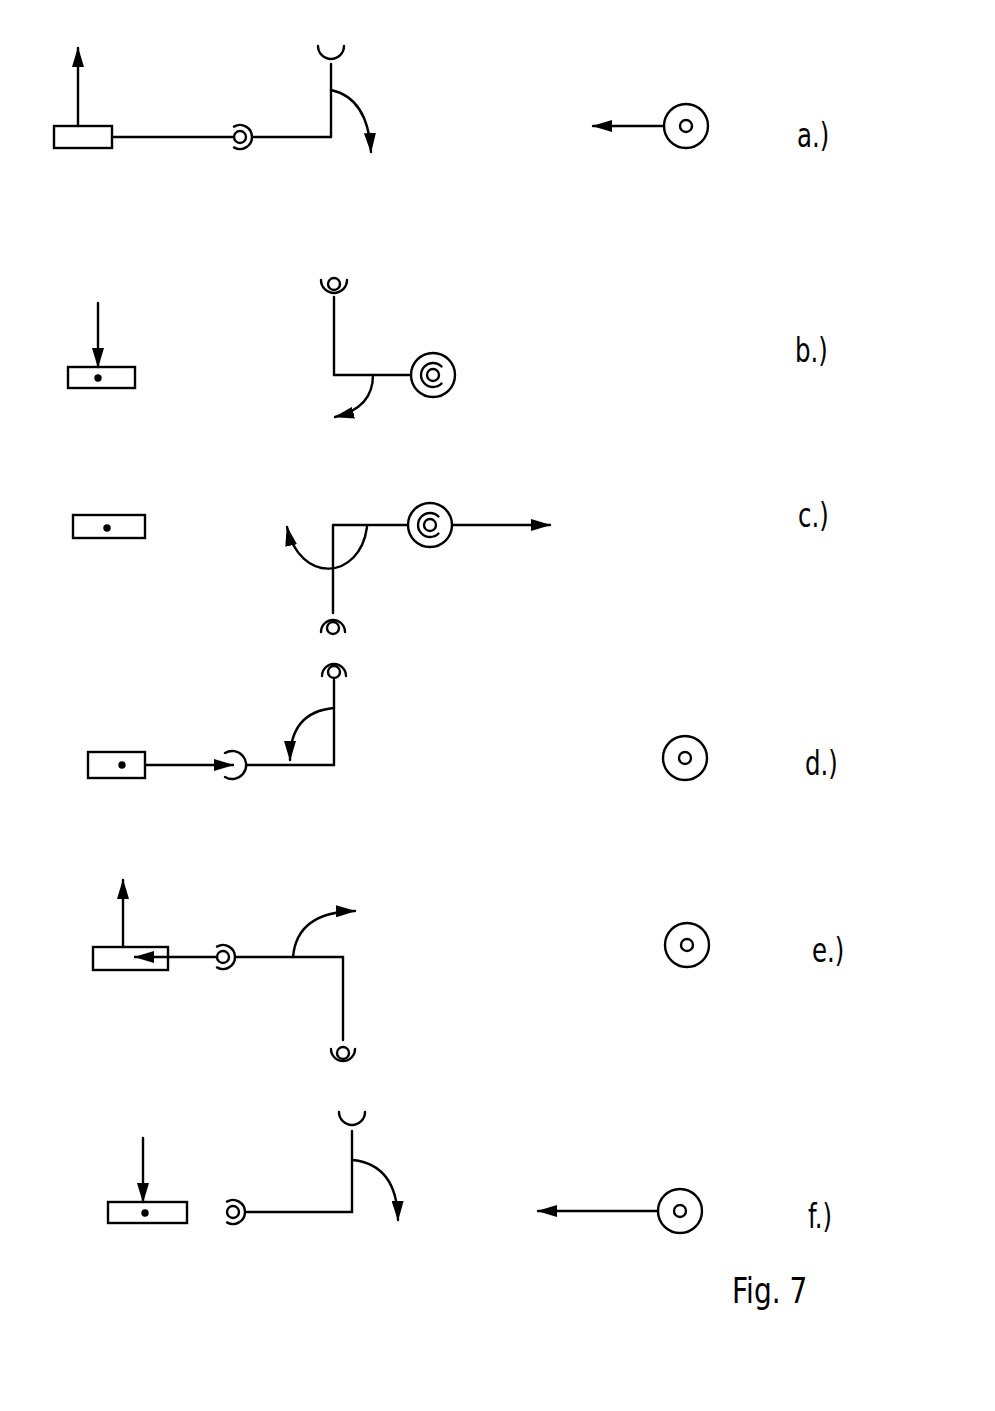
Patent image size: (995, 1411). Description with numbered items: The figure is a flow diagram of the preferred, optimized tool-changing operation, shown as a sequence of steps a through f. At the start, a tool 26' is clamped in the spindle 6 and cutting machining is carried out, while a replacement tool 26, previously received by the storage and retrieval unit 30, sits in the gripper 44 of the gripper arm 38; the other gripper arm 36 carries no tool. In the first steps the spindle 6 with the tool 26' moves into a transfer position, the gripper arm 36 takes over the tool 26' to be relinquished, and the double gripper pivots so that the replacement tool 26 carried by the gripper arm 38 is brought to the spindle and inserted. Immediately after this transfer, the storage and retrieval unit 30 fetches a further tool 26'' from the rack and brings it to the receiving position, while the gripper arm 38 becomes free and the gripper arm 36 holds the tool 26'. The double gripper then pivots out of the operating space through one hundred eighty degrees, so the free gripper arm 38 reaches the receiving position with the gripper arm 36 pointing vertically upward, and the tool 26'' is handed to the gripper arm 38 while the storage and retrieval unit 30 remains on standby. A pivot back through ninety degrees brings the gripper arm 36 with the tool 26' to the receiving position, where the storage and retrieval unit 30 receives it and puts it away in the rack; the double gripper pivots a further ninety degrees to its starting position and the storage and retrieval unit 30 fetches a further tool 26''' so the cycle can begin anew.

The spindle 6 is at (698, 107).
The replacement tool 26 is at (498, 679).
The tool to be relinquished 26' is at (450, 597).
The further tool 26'' is at (263, 833).
The further tool 26''' is at (147, 1251).
The storage and retrieval unit 30 is at (73, 140).
The gripper arm 36 is at (331, 78).
The gripper arm 38 is at (307, 137).
The gripper 44 is at (240, 129).